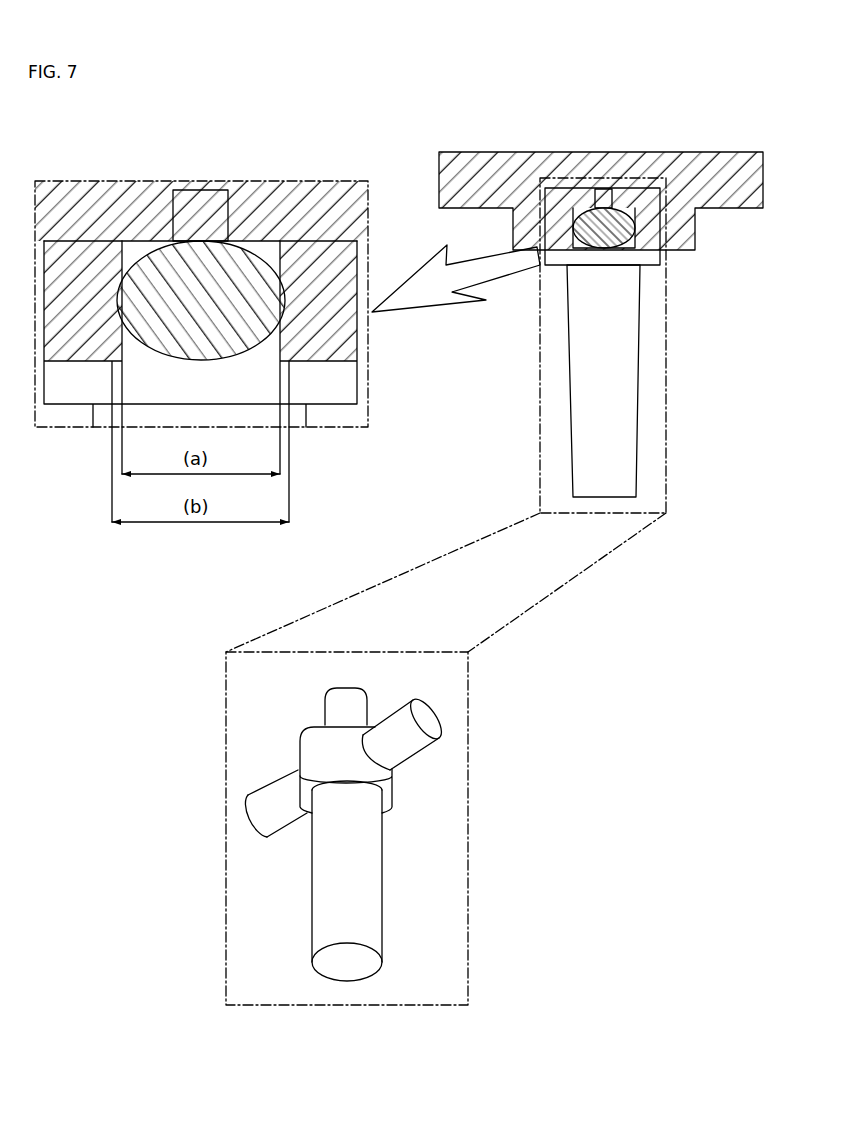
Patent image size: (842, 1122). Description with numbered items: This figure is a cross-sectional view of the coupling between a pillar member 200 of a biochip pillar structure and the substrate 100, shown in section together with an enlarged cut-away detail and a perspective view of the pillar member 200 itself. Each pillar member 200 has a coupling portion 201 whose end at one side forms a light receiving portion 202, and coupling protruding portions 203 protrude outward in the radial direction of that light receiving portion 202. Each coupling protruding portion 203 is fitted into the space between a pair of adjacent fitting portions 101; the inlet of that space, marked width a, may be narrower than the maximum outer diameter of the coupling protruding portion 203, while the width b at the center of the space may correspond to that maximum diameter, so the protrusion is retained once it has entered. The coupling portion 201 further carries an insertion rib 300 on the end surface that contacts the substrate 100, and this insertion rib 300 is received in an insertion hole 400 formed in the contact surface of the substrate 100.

The substrate 100 is at (700, 160).
The fitting portion 101 is at (86, 174).
The pillar member 200 is at (412, 848).
The coupling portion 201 is at (307, 752).
The light receiving portion 202 is at (318, 724).
The coupling protruding portion 203 is at (247, 263).
The insertion rib 300 is at (183, 208).
The insertion hole 400 is at (213, 205).